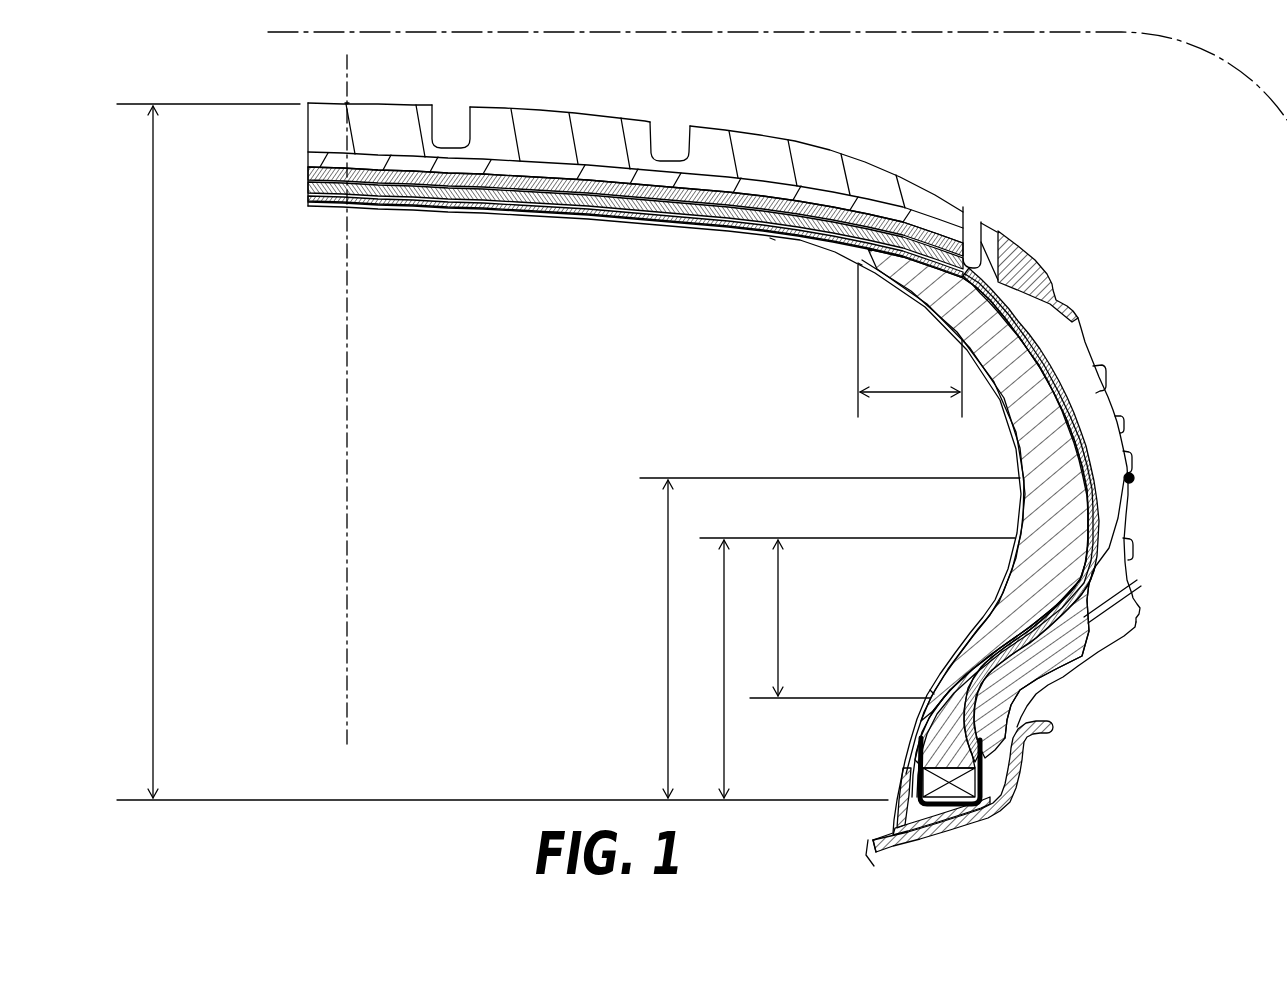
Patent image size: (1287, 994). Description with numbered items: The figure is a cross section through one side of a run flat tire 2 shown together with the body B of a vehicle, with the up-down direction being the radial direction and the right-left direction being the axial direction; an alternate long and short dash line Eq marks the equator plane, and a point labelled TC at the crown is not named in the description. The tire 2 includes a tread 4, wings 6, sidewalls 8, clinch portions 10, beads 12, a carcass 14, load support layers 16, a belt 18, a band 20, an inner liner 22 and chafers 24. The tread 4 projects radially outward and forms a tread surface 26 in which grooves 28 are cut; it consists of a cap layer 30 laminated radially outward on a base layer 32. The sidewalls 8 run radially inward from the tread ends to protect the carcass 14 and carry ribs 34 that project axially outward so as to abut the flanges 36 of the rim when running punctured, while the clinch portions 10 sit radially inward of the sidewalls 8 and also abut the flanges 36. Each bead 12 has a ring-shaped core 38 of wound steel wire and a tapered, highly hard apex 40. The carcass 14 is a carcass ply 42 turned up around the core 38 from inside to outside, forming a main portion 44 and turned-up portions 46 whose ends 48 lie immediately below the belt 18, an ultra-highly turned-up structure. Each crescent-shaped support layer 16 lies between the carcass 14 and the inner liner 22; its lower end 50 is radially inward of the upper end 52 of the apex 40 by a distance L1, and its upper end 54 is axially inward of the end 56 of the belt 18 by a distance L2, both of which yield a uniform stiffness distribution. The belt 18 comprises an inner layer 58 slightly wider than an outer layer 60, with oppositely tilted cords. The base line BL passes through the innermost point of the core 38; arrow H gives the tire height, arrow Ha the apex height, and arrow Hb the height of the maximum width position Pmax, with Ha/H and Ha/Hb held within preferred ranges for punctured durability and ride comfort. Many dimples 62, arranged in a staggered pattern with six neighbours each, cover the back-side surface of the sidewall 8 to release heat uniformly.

The run flat tire 2 is at (1207, 122).
The tread 4 is at (653, 164).
The wings 6 is at (1028, 275).
The sidewalls 8 is at (1130, 522).
The clinch portions 10 is at (1032, 684).
The beads 12 is at (916, 688).
The carcass 14 is at (1064, 356).
The load support layers 16 is at (1045, 509).
The belt 18 is at (569, 211).
The band 20 is at (393, 166).
The inner liner 22 is at (483, 210).
The chafers 24 is at (1017, 757).
The tread surface 26 is at (713, 127).
The grooves 28 is at (436, 128).
The cap layer 30 is at (533, 132).
The base layer 32 is at (607, 168).
The ribs 34 is at (1124, 618).
The flanges 36 is at (1010, 793).
The core 38 is at (925, 781).
The apex 40 is at (958, 735).
The carcass ply 42 is at (783, 500).
The main portion 44 is at (1070, 432).
The turned-up portions 46 is at (1084, 406).
The ends of the turned-up portions 48 is at (771, 240).
The lower ends of the support layers 50 is at (931, 690).
The upper ends of the apexes 52 is at (1124, 513).
The upper ends of the support layers 54 is at (858, 265).
The ends of the belt 56 is at (969, 245).
The inner layer 58 is at (305, 192).
The outer layer 60 is at (305, 180).
The dimples 62 is at (1106, 376).
The tread center TC is at (345, 100).
The equator plane Eq is at (347, 628).
The base line BL is at (600, 800).
The body of a vehicle B is at (1286, 250).
The height of the tire H is at (139, 452).
The height of the apex Ha is at (853, 668).
The height at the maximum width position Hb is at (828, 638).
The distance between support layer lower end and apex upper end L1 is at (838, 619).
The distance between support layer upper end and belt end L2 is at (910, 341).
The position of maximum width Pmax is at (1134, 478).